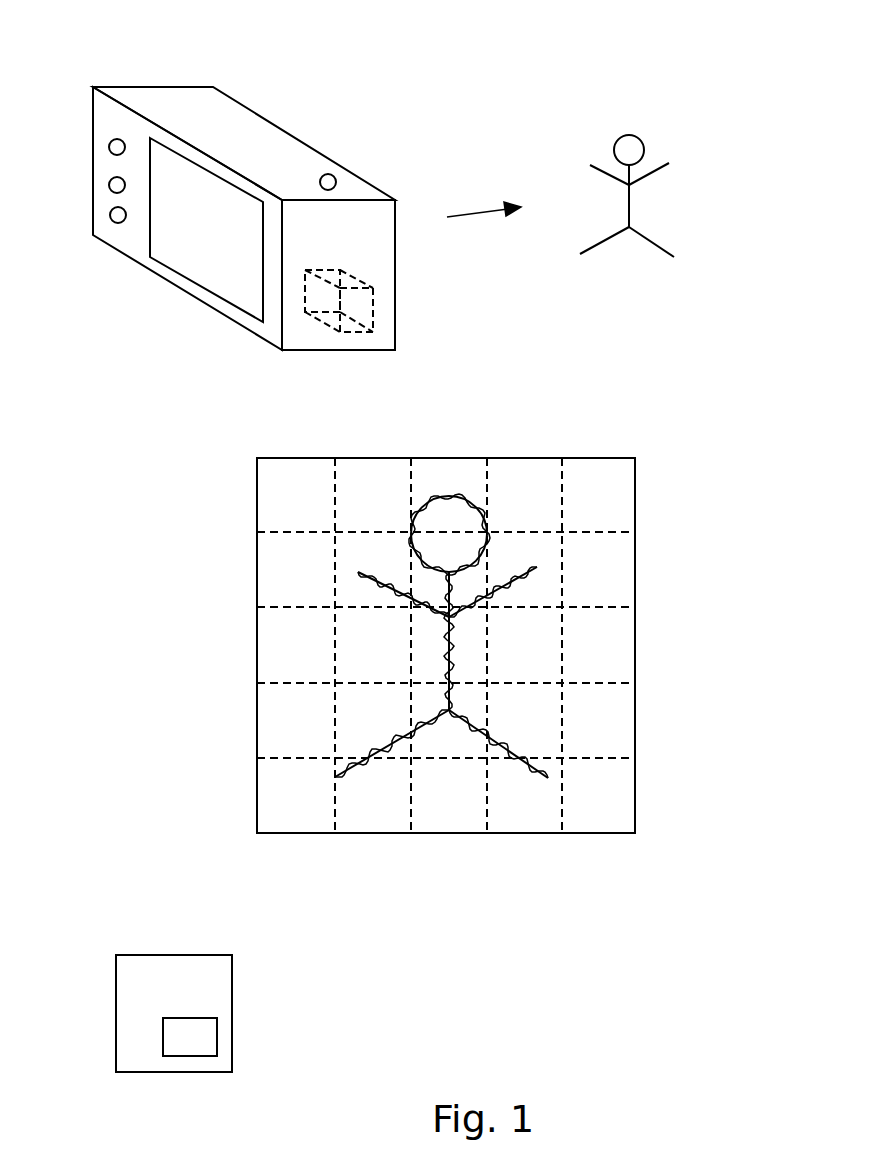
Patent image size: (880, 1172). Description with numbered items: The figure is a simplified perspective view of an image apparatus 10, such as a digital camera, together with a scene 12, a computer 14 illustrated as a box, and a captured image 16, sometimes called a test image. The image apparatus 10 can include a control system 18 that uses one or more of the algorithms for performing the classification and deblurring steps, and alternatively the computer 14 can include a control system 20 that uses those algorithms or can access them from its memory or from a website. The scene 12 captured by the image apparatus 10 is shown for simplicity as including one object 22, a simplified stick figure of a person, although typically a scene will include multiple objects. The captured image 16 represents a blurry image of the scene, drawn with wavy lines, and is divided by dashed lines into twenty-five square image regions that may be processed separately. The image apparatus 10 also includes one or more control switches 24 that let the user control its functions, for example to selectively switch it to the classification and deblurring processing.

The image apparatus 10 is at (205, 100).
The scene 12 is at (412, 232).
The computer 14 is at (176, 998).
The captured image 16 is at (621, 499).
The control system 18 is at (362, 312).
The control system 20 is at (173, 1050).
The object 22 is at (612, 214).
The control switches 24 is at (100, 229).